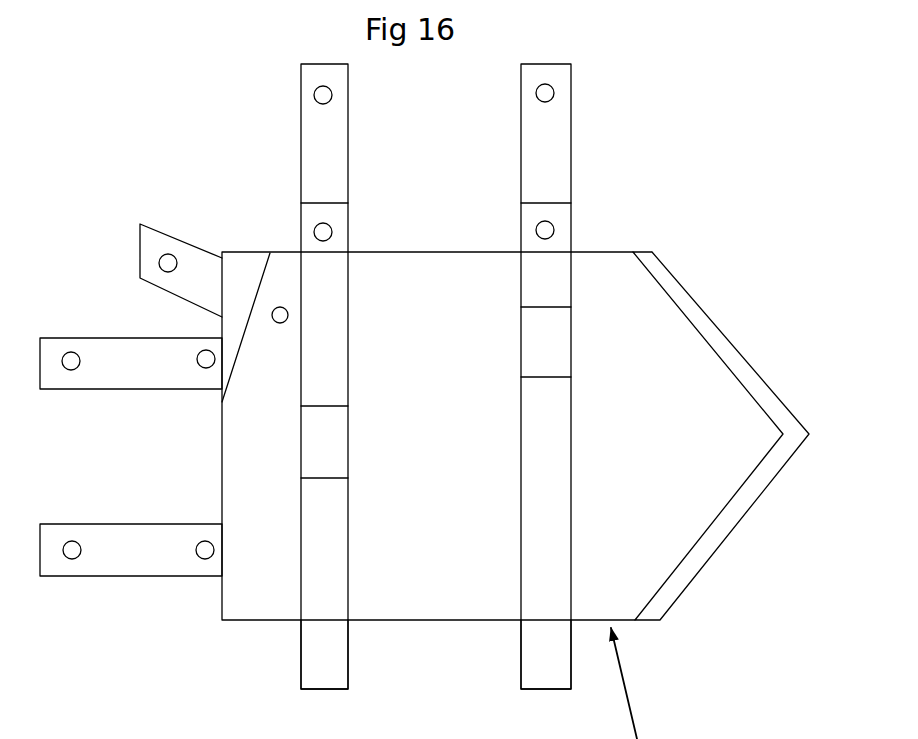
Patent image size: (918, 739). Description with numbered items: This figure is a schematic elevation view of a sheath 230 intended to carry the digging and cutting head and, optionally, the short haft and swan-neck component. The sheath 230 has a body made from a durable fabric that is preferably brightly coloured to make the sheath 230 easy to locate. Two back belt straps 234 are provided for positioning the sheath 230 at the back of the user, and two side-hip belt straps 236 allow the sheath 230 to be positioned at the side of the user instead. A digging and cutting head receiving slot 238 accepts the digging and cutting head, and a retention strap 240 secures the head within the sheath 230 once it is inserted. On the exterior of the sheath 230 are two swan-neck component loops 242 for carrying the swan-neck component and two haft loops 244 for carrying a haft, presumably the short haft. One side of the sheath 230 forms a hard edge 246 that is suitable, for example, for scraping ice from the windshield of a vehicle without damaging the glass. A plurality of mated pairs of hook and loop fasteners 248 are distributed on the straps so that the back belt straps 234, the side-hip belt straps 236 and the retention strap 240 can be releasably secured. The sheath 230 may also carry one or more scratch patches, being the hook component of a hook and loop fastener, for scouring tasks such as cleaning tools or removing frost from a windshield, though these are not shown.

The sheath 230 is at (668, 240).
The back belt straps 234 is at (520, 120).
The side-hip belt straps 236 is at (163, 523).
The digging and cutting head receiving slot 238 is at (252, 294).
The retention strap 240 is at (197, 250).
The swan-neck component loops 242 is at (340, 452).
The haft loops 244 is at (522, 652).
The hard edge 246 is at (728, 535).
The hook and loop fasteners 248 is at (555, 95).